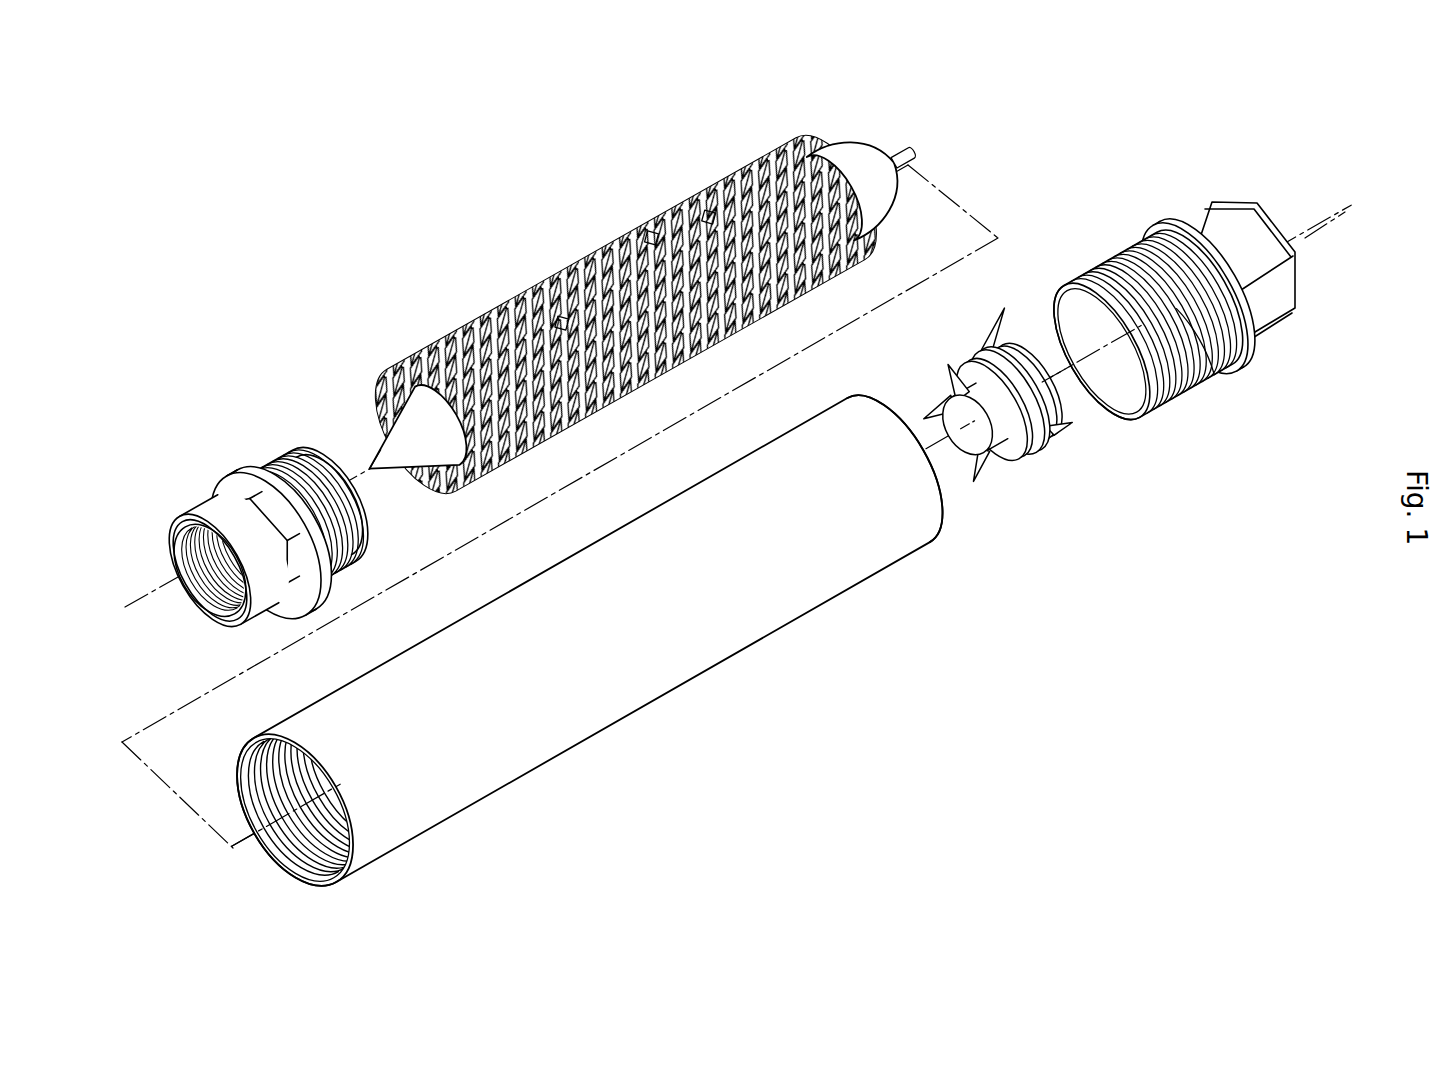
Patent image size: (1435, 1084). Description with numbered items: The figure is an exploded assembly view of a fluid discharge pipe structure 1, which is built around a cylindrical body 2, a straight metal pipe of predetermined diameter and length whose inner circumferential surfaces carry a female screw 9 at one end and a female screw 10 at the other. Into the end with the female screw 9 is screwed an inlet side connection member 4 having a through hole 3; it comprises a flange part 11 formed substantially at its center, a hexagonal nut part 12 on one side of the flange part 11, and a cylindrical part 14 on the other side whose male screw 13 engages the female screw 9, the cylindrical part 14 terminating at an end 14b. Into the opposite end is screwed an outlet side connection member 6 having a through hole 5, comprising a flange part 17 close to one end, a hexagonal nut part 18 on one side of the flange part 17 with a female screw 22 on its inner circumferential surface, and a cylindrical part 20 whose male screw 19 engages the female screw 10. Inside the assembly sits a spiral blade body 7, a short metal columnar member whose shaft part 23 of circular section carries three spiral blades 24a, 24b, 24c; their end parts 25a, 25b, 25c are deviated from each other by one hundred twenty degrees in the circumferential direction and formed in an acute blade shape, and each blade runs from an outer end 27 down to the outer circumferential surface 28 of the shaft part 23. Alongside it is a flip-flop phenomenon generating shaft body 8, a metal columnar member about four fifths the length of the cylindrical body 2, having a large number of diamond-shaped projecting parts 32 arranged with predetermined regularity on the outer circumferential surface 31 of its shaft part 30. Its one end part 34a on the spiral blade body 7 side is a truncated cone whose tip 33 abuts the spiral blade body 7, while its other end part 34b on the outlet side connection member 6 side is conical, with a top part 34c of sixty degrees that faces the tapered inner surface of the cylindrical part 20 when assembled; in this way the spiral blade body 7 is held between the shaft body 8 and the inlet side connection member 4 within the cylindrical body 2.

The fluid discharge pipe structure 1 is at (651, 313).
The cylindrical body 2 is at (577, 648).
The through hole 3 is at (1122, 412).
The inlet side connection member 4 is at (1177, 322).
The through hole 5 is at (268, 501).
The outlet side connection member 6 is at (288, 460).
The spiral blade body 7 is at (995, 426).
The flip-flop phenomenon generating shaft body 8 is at (665, 232).
The female screw 9 is at (940, 515).
The female screw 10 is at (320, 872).
The flange part 11 is at (1165, 226).
The hexagonal nut part 12 is at (1262, 222).
The male screw 13 is at (1192, 372).
The cylindrical part 14 is at (1115, 268).
The end of the cylindrical part 14b is at (1128, 392).
The flange part 17 is at (258, 472).
The hexagonal nut part 18 is at (228, 502).
The male screw 19 is at (313, 456).
The cylindrical part 20 is at (357, 545).
The female screw 22 is at (200, 553).
The shaft part 23 is at (948, 402).
The spiral blade 24a is at (1018, 462).
The spiral blade 24b is at (1035, 445).
The spiral blade 24c is at (1062, 435).
The end part of blade 25a is at (985, 484).
The end part of blade 25b is at (930, 420).
The end part of blade 25c is at (958, 368).
The outer end of blade 27 is at (998, 350).
The outer circumferential surface of shaft part 28 is at (1012, 375).
The shaft part 30 is at (640, 265).
The outer circumferential surface 31 is at (725, 222).
The diamond-shaped projecting parts 32 is at (566, 290).
The tip 33 is at (905, 160).
The one end part 34a is at (868, 165).
The another end part 34b is at (378, 432).
The top part 34c is at (370, 470).